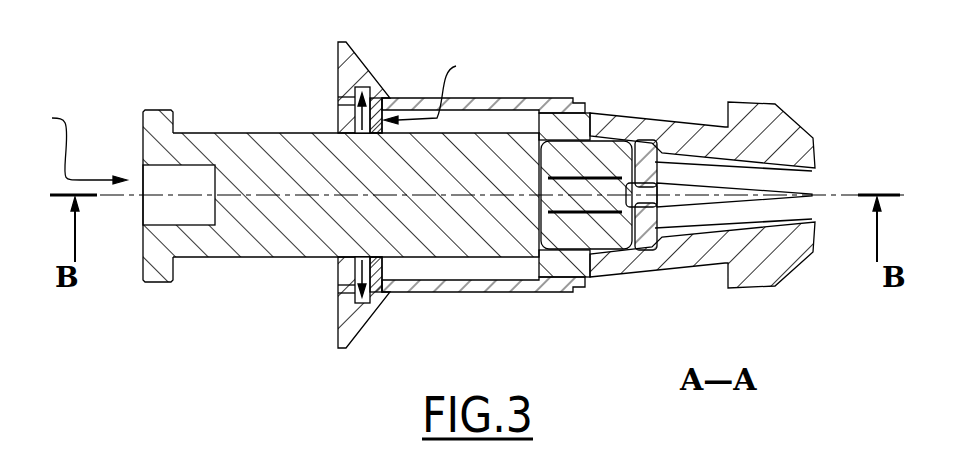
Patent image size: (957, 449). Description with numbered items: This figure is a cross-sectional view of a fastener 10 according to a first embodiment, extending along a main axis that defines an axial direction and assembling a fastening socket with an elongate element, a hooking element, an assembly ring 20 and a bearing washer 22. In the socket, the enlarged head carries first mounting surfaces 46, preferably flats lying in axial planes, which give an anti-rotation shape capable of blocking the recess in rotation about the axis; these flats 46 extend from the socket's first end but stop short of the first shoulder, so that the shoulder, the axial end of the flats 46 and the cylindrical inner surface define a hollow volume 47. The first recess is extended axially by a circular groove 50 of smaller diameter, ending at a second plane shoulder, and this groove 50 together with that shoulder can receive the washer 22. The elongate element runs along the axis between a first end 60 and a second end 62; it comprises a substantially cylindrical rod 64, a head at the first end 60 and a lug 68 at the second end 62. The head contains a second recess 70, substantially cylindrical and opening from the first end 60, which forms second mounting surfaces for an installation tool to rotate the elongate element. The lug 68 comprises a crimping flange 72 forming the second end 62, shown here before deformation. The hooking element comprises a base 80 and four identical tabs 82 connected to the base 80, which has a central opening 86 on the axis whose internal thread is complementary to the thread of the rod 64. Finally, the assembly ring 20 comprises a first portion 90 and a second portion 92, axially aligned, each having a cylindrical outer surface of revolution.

The fastener 10 is at (829, 380).
The assembly ring 20 is at (502, 97).
The bearing washer 22 is at (435, 82).
The first mounting surfaces 46 is at (338, 274).
The hollow volume 47 is at (345, 150).
The circular groove 50 is at (380, 300).
The first end 60 is at (143, 133).
The second end 62 is at (645, 222).
The cylindrical rod 64 is at (258, 242).
The lug 68 is at (605, 235).
The second recess 70 is at (75, 139).
The crimping flange 72 is at (645, 125).
The base 80 is at (543, 113).
The tabs 82 is at (557, 283).
The central opening 86 is at (575, 130).
The first portion 90 is at (568, 230).
The second portion 92 is at (643, 222).